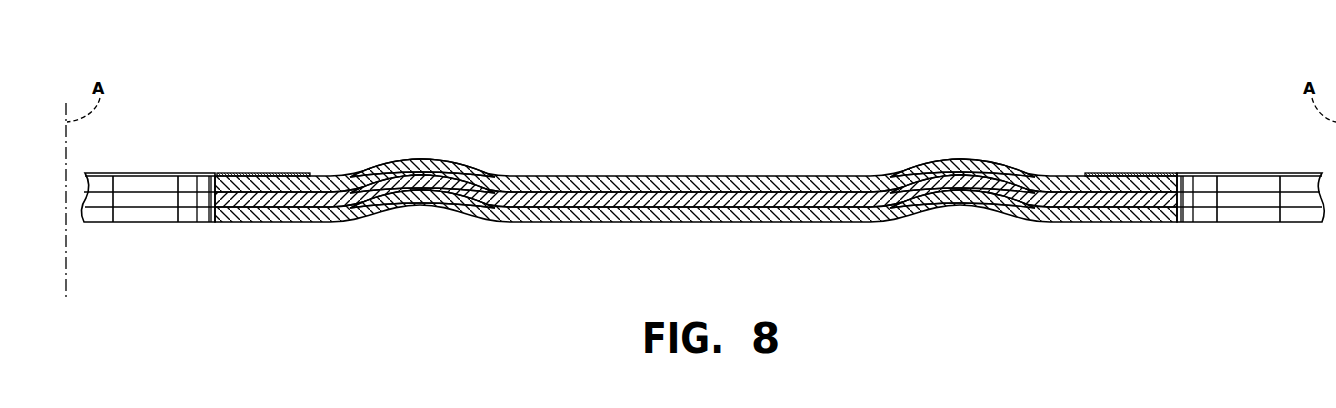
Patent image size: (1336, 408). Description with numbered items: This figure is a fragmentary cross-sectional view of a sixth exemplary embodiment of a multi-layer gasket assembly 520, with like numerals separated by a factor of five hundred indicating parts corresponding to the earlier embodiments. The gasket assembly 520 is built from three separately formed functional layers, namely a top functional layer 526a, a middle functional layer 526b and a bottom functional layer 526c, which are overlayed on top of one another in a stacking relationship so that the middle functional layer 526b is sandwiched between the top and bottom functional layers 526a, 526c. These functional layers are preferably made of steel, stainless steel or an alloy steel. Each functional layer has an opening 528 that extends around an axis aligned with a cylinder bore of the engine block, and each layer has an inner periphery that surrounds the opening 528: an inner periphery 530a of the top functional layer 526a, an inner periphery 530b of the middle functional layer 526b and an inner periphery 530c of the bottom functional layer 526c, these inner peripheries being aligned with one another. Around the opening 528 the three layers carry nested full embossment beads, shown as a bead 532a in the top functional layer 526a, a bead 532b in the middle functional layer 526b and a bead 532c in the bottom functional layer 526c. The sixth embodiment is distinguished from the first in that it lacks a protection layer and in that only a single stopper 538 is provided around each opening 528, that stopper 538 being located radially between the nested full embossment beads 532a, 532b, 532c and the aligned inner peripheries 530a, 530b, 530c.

The multi-layer gasket assembly 520 is at (696, 163).
The top functional layer 526a is at (668, 184).
The middle functional layer 526b is at (683, 199).
The bottom functional layer 526c is at (648, 215).
The opening 528 is at (143, 197).
The inner periphery of top functional layer 530a is at (197, 180).
The inner periphery of middle functional layer 530b is at (215, 197).
The inner periphery of bottom functional layer 530c is at (210, 216).
The full embossment bead of top functional layer 532a is at (422, 167).
The full embossment bead of middle functional layer 532b is at (425, 183).
The full embossment bead of bottom functional layer 532c is at (428, 198).
The stopper 538 is at (257, 173).